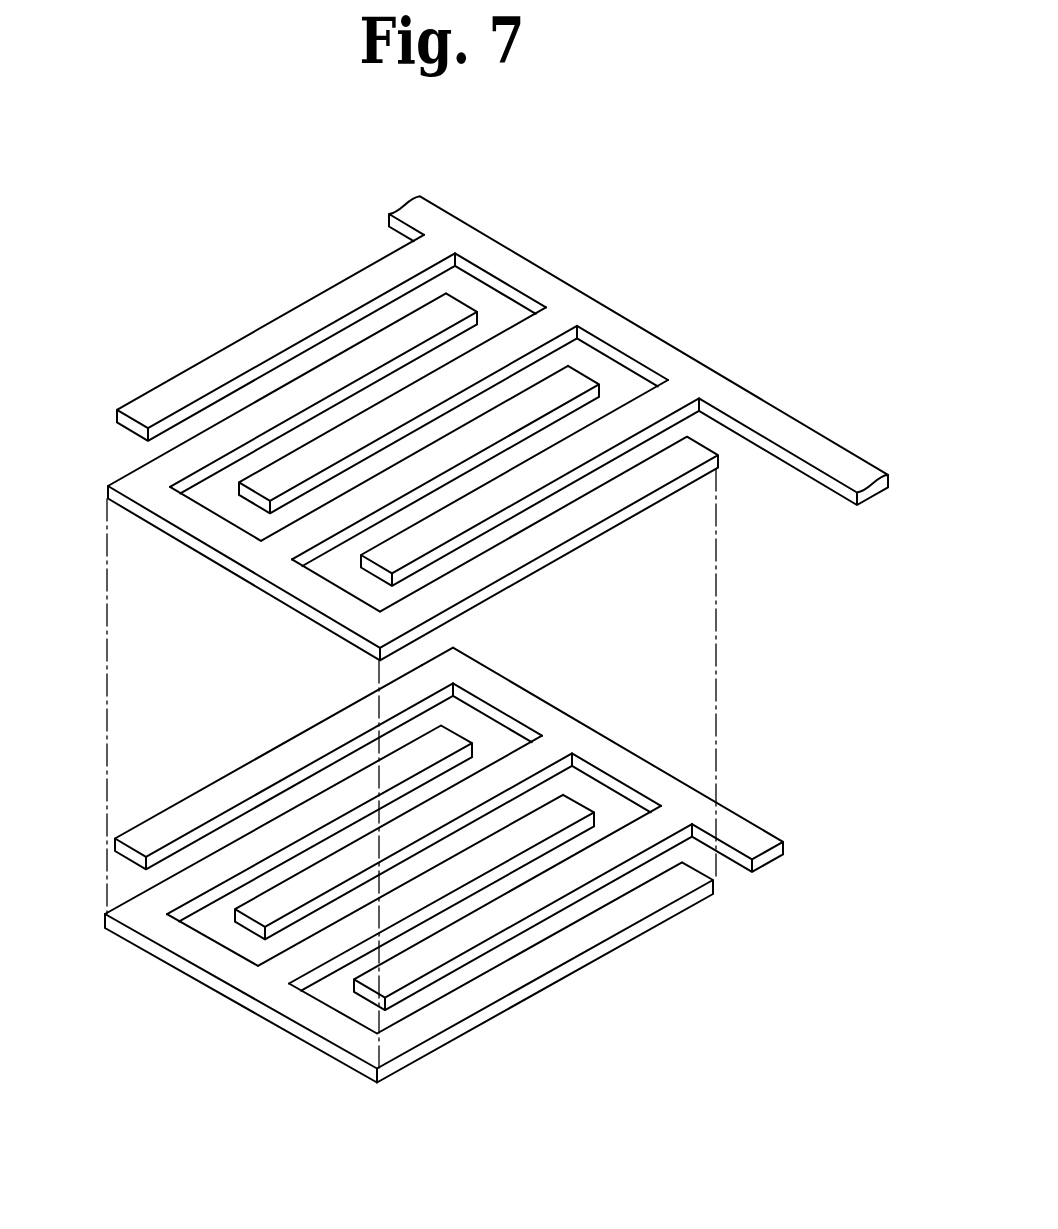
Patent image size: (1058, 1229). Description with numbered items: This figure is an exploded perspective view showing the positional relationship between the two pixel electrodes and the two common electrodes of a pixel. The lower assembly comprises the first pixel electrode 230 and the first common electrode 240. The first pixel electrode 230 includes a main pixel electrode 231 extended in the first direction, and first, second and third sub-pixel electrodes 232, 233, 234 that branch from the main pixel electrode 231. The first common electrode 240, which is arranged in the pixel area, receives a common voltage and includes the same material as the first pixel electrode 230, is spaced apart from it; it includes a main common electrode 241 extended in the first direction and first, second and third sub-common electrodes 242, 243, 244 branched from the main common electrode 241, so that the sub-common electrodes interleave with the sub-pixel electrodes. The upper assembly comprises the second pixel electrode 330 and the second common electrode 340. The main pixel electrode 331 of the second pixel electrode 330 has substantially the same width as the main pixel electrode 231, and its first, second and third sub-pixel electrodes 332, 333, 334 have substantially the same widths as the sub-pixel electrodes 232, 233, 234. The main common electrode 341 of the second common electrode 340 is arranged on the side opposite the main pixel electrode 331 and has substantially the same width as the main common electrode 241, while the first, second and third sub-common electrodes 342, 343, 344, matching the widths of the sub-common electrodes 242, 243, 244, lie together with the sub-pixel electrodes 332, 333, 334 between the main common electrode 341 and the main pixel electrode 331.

The first pixel electrode 230 is at (409, 869).
The main pixel electrode 231 is at (300, 1009).
The first sub-pixel electrode 232 is at (228, 858).
The second sub-pixel electrode 233 is at (550, 815).
The third sub-pixel electrode 234 is at (495, 996).
The first common electrode 240 is at (456, 838).
The main common electrode 241 is at (605, 755).
The first sub-common electrode 242 is at (268, 760).
The second sub-common electrode 243 is at (280, 903).
The third sub-common electrode 244 is at (636, 833).
The second pixel electrode 330 is at (413, 455).
The main pixel electrode 331 is at (263, 558).
The first sub-pixel electrode 332 is at (227, 438).
The second sub-pixel electrode 333 is at (568, 390).
The third sub-pixel electrode 334 is at (552, 532).
The second common electrode 340 is at (502, 357).
The main common electrode 341 is at (770, 423).
The first sub-common electrode 342 is at (287, 332).
The second sub-common electrode 343 is at (537, 335).
The third sub-common electrode 344 is at (638, 412).